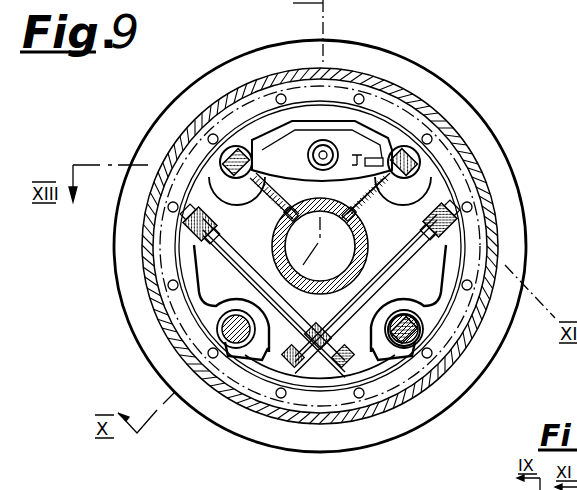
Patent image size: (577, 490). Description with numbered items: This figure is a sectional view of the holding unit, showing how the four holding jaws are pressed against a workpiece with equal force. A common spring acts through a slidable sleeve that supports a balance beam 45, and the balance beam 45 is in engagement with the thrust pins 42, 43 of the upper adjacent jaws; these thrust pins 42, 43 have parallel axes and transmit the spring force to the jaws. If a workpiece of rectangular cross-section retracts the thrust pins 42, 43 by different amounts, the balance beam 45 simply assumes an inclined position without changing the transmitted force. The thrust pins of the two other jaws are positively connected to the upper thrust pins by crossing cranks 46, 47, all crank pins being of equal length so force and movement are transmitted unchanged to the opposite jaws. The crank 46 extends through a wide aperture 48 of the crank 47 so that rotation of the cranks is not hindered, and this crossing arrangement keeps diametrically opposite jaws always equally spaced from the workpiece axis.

The thrust pin 42 is at (232, 152).
The thrust pin 43 is at (412, 152).
The balance beam 45 is at (364, 151).
The crank 46 is at (220, 264).
The crank 47 is at (408, 266).
The wide aperture 48 is at (318, 355).